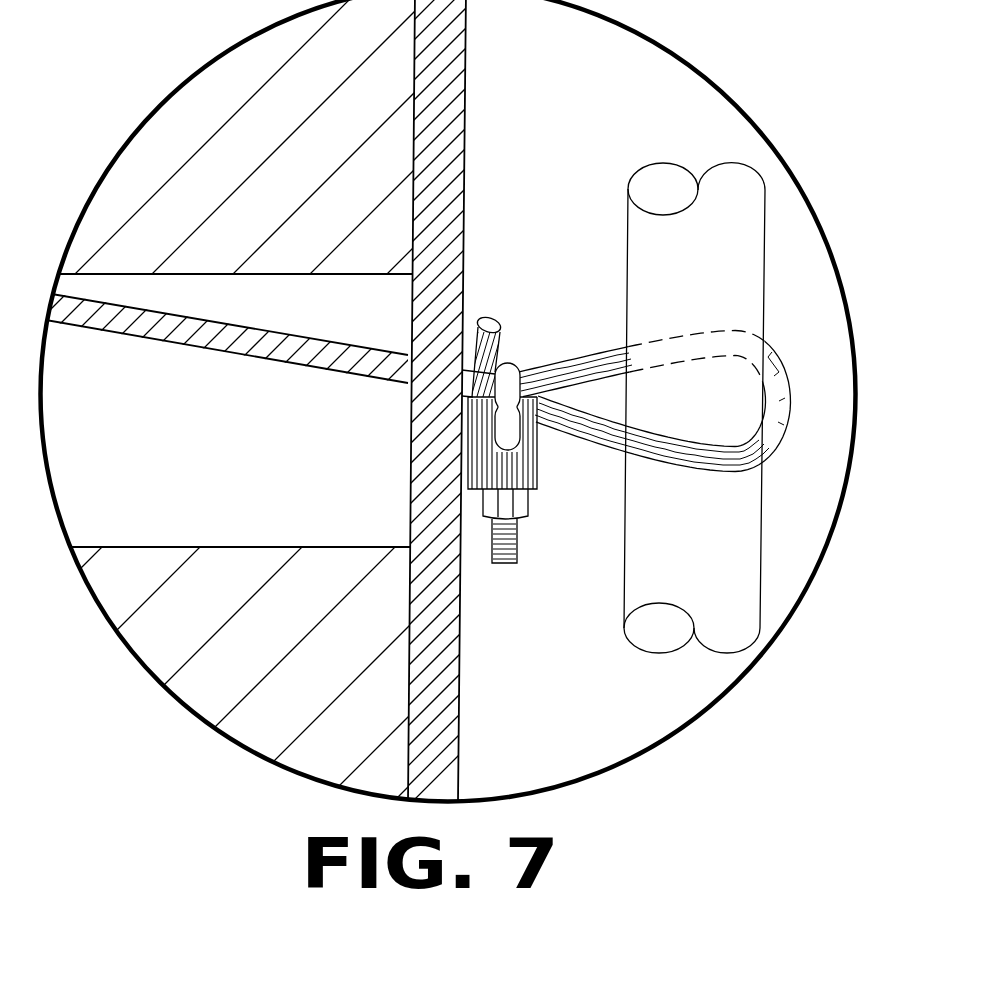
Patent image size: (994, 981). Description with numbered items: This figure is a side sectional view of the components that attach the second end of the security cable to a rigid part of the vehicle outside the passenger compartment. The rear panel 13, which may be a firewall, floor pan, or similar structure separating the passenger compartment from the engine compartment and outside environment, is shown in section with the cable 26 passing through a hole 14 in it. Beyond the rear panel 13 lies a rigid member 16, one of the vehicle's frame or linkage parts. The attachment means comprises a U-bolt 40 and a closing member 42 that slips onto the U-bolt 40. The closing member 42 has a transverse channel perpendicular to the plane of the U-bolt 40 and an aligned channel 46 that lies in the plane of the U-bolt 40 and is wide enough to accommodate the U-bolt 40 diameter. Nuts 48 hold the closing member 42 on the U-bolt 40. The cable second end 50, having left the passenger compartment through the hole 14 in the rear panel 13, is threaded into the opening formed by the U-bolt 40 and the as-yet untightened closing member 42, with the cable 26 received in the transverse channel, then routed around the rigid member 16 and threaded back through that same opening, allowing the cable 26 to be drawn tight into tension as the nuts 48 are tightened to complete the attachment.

The rear panel 13 is at (465, 97).
The hole 14 is at (406, 386).
The rigid member 16 is at (649, 283).
The cable 26 is at (242, 355).
The U-bolt 40 is at (509, 363).
The closing member 42 is at (538, 468).
The aligned channel 46 is at (503, 444).
The nuts 48 is at (522, 515).
The cable second end 50 is at (489, 318).